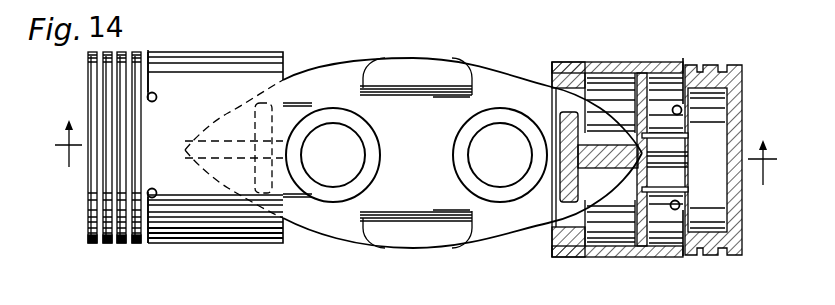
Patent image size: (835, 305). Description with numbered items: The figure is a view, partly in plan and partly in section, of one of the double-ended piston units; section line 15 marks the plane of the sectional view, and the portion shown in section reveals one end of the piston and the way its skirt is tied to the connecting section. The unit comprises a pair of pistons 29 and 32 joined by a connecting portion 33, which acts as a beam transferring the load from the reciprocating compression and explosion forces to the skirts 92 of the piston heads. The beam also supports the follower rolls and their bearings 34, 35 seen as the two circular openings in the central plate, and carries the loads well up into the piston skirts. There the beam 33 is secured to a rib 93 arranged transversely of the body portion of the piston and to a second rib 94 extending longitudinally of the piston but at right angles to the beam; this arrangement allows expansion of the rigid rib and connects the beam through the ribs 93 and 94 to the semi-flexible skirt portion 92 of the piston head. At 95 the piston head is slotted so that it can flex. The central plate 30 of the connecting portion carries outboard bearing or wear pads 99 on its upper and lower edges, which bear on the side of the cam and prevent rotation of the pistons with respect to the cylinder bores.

The section line 15 is at (418, 152).
The piston 29 is at (640, 51).
The plate body 30 is at (470, 40).
The piston 32 is at (262, 40).
The connecting portion 33 is at (438, 108).
The bearings 34 is at (517, 193).
The left bore 35 is at (342, 190).
The skirt 92 is at (245, 232).
The rib 93 is at (557, 110).
The second rib 94 is at (586, 168).
The slot 95 is at (148, 52).
The wear pads 99 is at (403, 77).